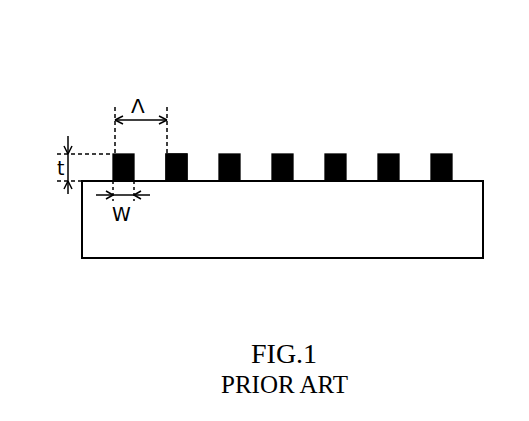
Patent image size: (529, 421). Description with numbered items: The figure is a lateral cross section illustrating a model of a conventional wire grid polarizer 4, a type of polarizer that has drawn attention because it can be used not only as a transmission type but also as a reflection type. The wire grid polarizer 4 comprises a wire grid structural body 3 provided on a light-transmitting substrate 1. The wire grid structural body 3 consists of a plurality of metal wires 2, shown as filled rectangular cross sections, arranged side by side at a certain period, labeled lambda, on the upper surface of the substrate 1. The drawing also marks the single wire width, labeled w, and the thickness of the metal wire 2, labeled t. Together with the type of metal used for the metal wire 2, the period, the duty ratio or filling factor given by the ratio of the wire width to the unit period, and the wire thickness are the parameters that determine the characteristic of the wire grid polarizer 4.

The light-transmitting substrate 1 is at (83, 259).
The metal wire 2 is at (168, 162).
The wire grid structural body 3 is at (196, 142).
The wire grid polarizer 4 is at (69, 79).